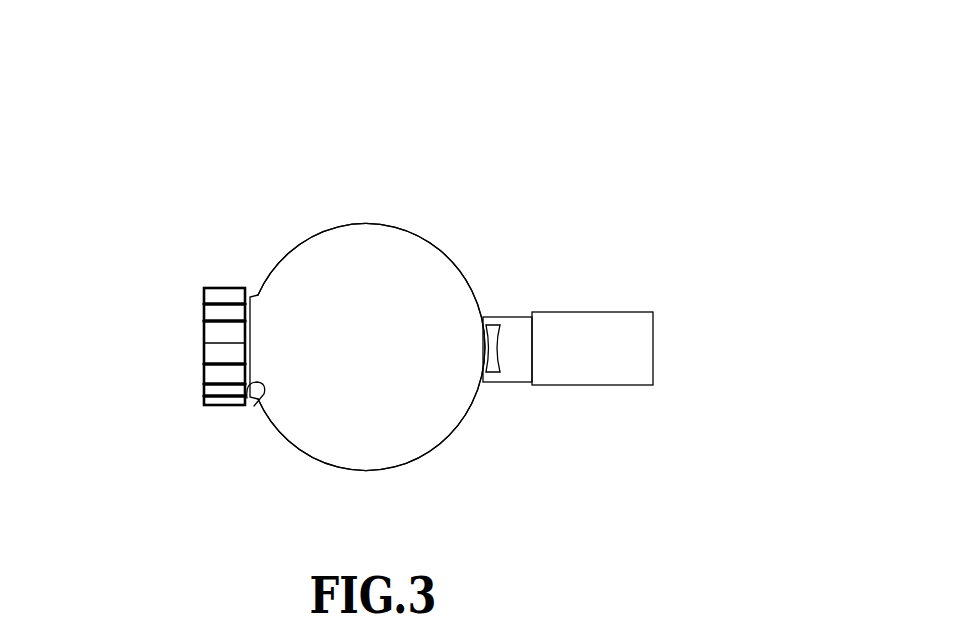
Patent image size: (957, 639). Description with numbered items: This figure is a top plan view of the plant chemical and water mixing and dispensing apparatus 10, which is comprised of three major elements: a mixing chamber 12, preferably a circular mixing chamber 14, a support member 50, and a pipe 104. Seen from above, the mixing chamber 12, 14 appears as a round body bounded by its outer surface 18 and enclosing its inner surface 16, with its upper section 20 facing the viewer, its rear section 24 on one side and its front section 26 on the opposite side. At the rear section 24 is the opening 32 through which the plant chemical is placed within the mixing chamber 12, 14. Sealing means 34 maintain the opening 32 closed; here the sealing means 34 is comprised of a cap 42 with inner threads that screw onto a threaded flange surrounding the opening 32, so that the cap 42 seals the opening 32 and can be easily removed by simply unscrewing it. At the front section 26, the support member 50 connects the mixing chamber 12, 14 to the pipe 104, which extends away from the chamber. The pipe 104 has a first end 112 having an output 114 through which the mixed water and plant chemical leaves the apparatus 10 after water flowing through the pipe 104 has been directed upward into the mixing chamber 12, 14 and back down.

The plant chemical and water mixing and dispensing apparatus 10 is at (150, 54).
The mixing chamber 12 is at (450, 300).
The circular mixing chamber 14 is at (512, 183).
The inner surface 16 is at (418, 263).
The outer surface 18 is at (440, 285).
The upper section 20 is at (352, 298).
The rear section 24 is at (256, 283).
The front section 26 is at (482, 302).
The opening 32 is at (252, 400).
The sealing means 34 is at (160, 346).
The cap 42 is at (222, 353).
The support member 50 is at (500, 350).
The pipe 104 is at (587, 469).
The first end 112 is at (682, 348).
The output 114 is at (655, 342).